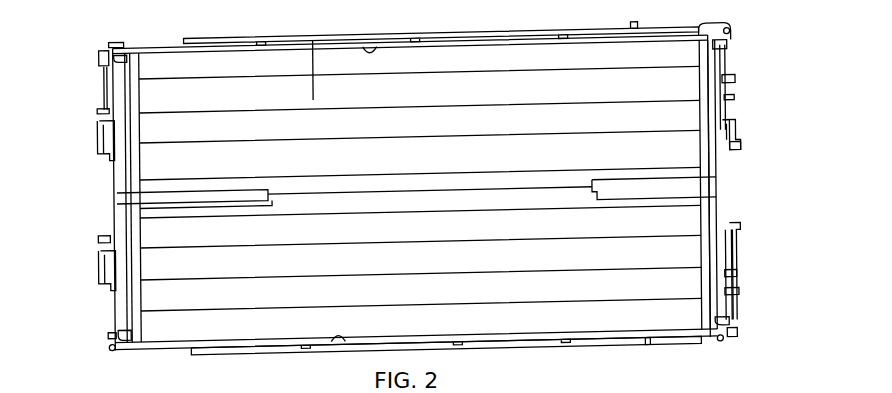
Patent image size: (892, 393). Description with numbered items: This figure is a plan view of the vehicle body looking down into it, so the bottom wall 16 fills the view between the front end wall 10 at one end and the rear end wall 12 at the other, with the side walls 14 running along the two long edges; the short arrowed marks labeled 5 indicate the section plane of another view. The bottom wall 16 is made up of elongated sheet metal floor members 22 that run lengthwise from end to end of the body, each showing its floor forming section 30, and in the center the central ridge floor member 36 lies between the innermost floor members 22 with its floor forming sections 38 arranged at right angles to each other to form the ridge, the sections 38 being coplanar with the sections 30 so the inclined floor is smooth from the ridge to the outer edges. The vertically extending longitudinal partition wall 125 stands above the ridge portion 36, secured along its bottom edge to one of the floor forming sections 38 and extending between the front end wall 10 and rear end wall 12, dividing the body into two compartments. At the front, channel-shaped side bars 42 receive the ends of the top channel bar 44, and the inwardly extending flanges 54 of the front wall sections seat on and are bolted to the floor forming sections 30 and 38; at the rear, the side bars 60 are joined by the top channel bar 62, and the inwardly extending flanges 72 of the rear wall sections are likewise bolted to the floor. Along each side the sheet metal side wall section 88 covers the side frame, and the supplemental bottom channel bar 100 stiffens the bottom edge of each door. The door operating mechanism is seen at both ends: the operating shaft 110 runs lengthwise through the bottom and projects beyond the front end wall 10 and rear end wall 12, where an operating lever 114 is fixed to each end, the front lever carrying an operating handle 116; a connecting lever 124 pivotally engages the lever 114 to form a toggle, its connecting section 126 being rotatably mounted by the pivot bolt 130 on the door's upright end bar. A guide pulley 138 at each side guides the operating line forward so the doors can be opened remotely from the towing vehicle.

The front end wall 10 is at (717, 62).
The rear end wall 12 is at (128, 172).
The side wall 14 is at (632, 36).
The bottom wall 16 is at (529, 96).
The floor member 22 is at (220, 294).
The floor forming section 30 is at (313, 42).
The central ridge floor member 36 is at (443, 193).
The floor forming section of the ridge member 38 is at (543, 181).
The side bar of the front end wall 42 is at (736, 25).
The top channel bar of the front end wall 44 is at (720, 210).
The inwardly extending flange 54 is at (707, 143).
The side bar of the rear end wall 60 is at (137, 56).
The top channel bar of the rear end wall 62 is at (128, 296).
The inwardly extending flange of the rear wall section 72 is at (136, 135).
The side wall section 88 is at (381, 44).
The supplemental bottom channel bar 100 is at (467, 33).
The operating shaft 110 is at (100, 108).
The operating lever 114 is at (102, 131).
The operating handle 116 is at (100, 239).
The connecting lever 124 is at (104, 91).
The longitudinal partition wall 125 is at (258, 193).
The connecting section 126 is at (101, 62).
The pivot bolt 130 is at (108, 47).
The guide pulley 138 is at (736, 83).
The section line 5- 5 is at (108, 197).